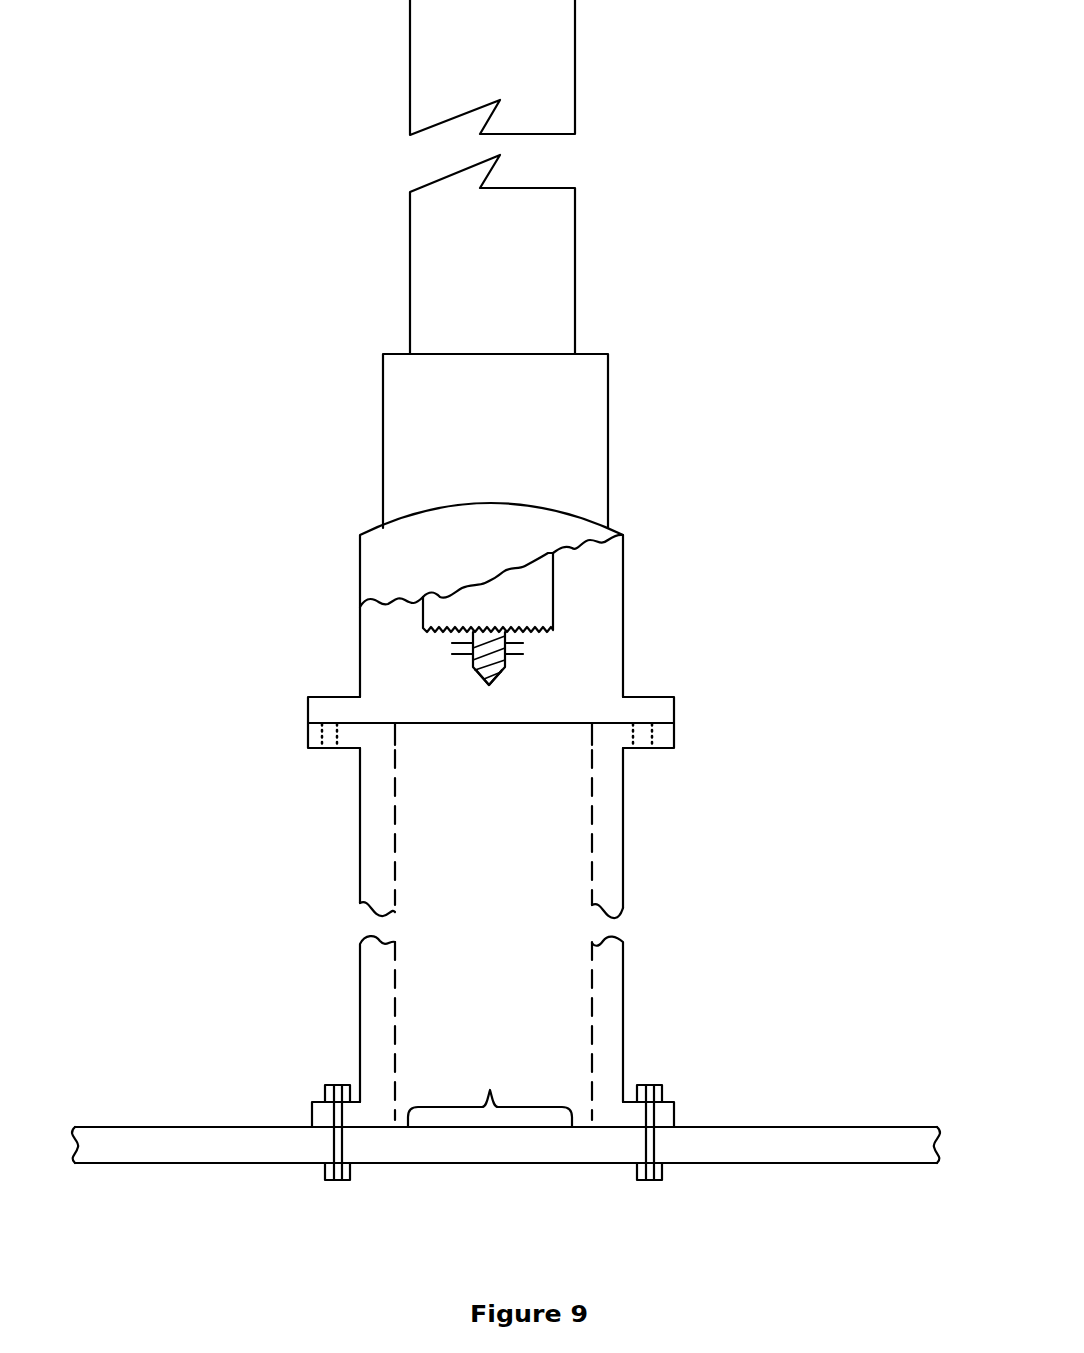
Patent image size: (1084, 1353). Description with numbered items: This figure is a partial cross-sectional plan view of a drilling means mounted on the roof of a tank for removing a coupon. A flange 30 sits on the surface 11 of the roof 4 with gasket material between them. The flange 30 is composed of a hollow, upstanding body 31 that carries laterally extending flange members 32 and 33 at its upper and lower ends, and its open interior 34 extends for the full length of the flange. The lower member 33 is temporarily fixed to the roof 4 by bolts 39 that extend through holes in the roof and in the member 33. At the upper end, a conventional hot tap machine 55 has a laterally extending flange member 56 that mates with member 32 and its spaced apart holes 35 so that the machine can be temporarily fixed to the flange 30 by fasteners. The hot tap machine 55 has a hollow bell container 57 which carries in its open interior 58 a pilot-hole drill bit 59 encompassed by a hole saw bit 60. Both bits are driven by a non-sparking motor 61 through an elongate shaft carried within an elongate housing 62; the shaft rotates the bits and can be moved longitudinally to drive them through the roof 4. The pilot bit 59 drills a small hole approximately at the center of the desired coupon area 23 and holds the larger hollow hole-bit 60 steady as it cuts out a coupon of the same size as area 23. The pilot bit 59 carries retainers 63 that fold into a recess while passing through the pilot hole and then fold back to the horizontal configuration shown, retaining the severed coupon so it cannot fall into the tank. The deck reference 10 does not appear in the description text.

The elongate housing 62 is at (577, 283).
The motor 61 is at (558, 430).
The hot tap machine 55 is at (664, 489).
The hollow bell container 57 is at (625, 625).
The open interior 58 is at (602, 677).
The hole saw bit 60 is at (545, 593).
The retainers 63 is at (518, 655).
The pilot-hole drill bit 59 is at (496, 675).
The laterally extending flange member 56 is at (675, 712).
The flange member 32 is at (674, 737).
The holes 35 is at (322, 737).
The upstanding body 31 is at (608, 832).
The flange 30 is at (649, 915).
The open interior 34 is at (530, 989).
The coupon area 23 is at (490, 1094).
The flange member 33 is at (675, 1112).
The bolts 39 is at (337, 1145).
The surface 11 is at (760, 1127).
The deck 10 is at (757, 1163).
The roof 4 is at (873, 1116).